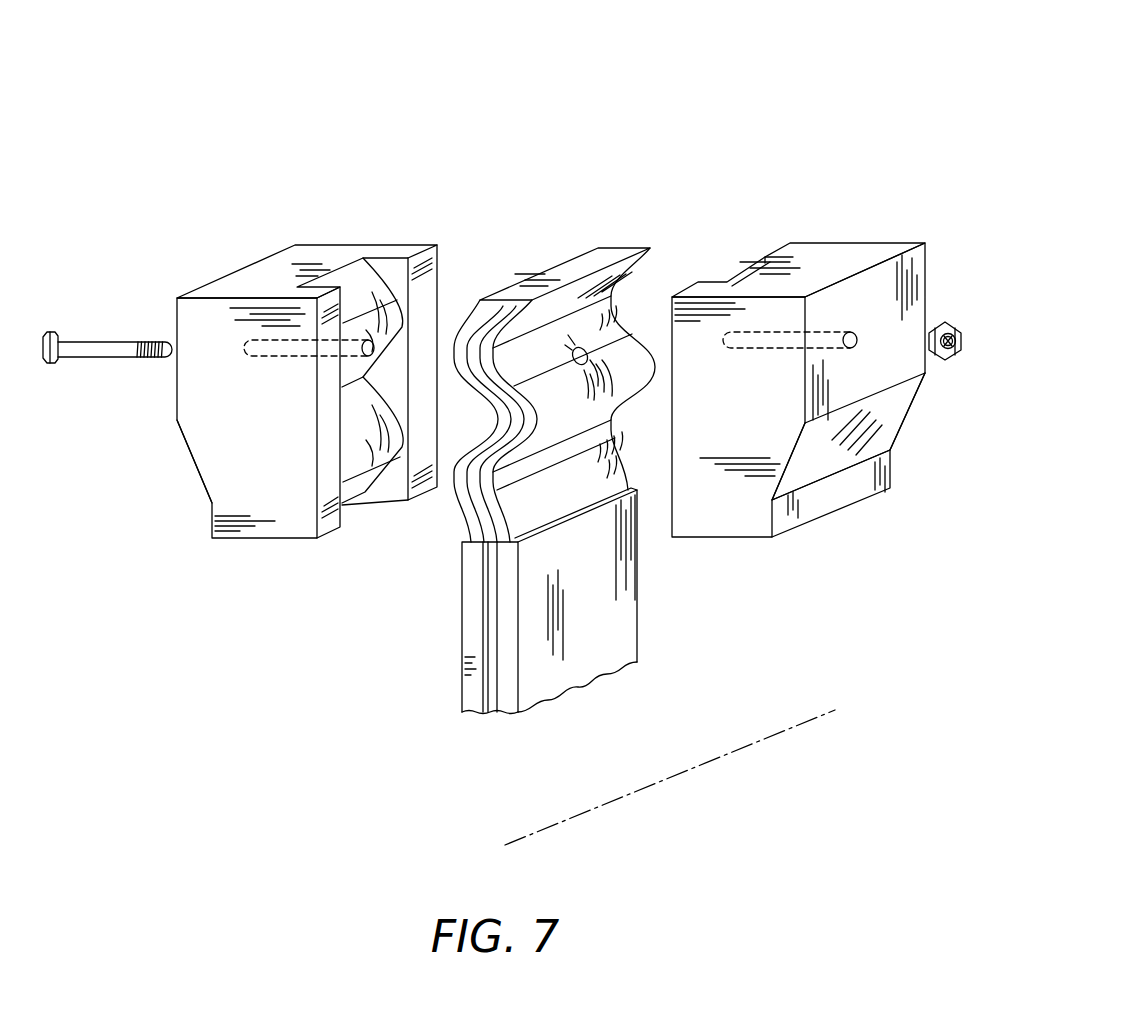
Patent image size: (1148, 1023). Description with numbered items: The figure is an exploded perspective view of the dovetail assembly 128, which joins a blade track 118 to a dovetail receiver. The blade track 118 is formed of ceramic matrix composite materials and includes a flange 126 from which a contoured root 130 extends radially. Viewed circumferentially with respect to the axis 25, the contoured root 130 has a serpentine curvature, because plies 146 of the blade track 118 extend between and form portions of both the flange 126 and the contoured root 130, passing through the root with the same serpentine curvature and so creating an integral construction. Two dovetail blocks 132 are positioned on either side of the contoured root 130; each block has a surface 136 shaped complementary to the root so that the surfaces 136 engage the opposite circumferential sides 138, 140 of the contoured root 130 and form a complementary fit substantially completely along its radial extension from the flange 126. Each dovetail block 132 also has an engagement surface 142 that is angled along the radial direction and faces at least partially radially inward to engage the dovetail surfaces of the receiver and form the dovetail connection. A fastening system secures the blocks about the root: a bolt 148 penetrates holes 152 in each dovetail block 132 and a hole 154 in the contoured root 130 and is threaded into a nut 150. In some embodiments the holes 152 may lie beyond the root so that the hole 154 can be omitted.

The dovetail assembly 128 is at (740, 62).
The dovetail blocks 132 is at (272, 243).
The surfaces 136 is at (352, 276).
The holes 152 is at (388, 334).
The contoured root 130 is at (600, 242).
The hole 154 is at (590, 346).
The bolt 148 is at (127, 330).
The nut 150 is at (943, 373).
The engagement surfaces 142 is at (185, 452).
The circumferential side 138 is at (450, 498).
The circumferential side 140 is at (571, 498).
The flange 126 is at (450, 657).
The plies 146 is at (486, 642).
The blade track 118 is at (285, 645).
The axis 25 is at (670, 762).